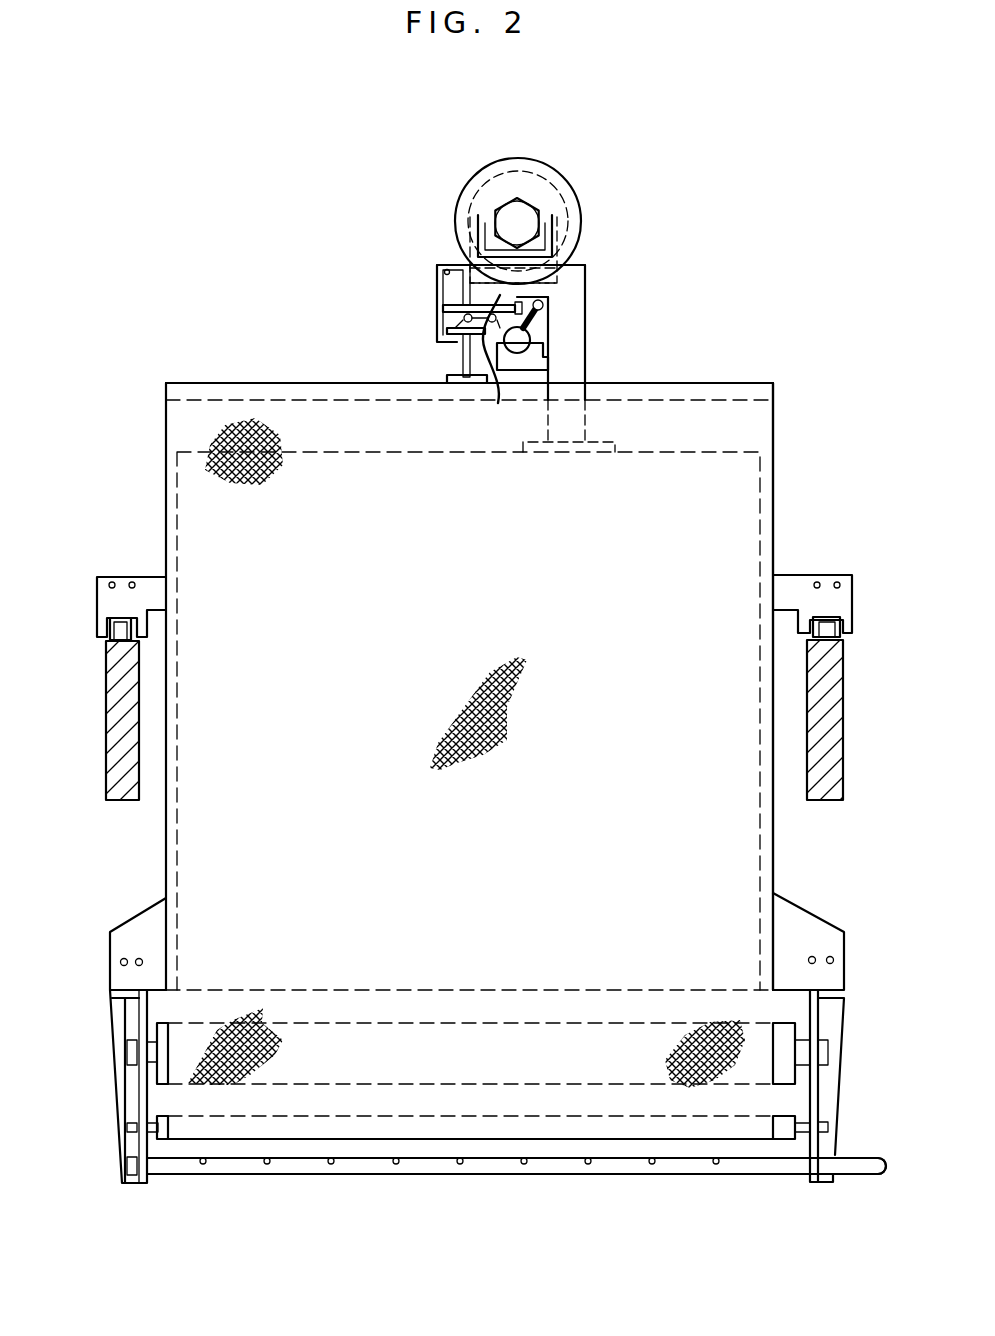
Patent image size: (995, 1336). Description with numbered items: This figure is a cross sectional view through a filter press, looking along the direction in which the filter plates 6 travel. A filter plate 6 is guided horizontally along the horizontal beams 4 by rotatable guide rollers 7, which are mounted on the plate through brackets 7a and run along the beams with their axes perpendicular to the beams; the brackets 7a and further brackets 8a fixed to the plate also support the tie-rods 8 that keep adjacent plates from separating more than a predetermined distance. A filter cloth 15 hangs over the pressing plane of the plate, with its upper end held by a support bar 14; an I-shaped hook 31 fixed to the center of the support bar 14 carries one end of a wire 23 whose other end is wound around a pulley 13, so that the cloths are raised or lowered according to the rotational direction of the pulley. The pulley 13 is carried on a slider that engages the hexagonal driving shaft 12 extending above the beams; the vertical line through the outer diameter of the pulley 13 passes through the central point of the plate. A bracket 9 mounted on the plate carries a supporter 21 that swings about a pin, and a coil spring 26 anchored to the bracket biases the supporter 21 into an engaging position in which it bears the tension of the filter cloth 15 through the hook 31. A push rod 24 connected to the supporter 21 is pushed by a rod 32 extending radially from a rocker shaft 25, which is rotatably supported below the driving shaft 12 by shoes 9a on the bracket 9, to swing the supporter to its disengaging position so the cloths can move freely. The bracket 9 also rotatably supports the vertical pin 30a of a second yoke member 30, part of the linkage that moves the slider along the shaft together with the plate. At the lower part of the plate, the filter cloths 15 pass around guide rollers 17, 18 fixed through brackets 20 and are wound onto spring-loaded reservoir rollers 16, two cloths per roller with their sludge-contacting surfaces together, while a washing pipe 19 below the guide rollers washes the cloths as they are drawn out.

The horizontal beams 4 is at (110, 723).
The filter plates 6 is at (773, 478).
The guide rollers 7 is at (117, 628).
The brackets 7a is at (103, 600).
The tie-rods 8 is at (132, 582).
The brackets 8a is at (145, 922).
The brackets 9 is at (585, 353).
The shoes 9a is at (543, 358).
The driving shaft 12 is at (522, 213).
The pulleys 13 is at (578, 222).
The support bars 14 is at (208, 383).
The filter cloths 15 is at (773, 418).
The reservoir rollers 16 is at (785, 1027).
The guide rollers 17 is at (783, 1140).
The guide rollers 18 is at (516, 1166).
The washing pipe 19 is at (585, 1176).
The brackets 20 is at (137, 1098).
The supporters 21 is at (443, 310).
The wire 23 is at (440, 290).
The push rods 24 is at (550, 290).
The rocker shaft 25 is at (530, 336).
The coil spring 26 is at (496, 369).
The second yoke members 30 is at (480, 227).
The pin 30a is at (560, 283).
The I-shaped hook 31 is at (463, 356).
The rods 32 is at (542, 308).